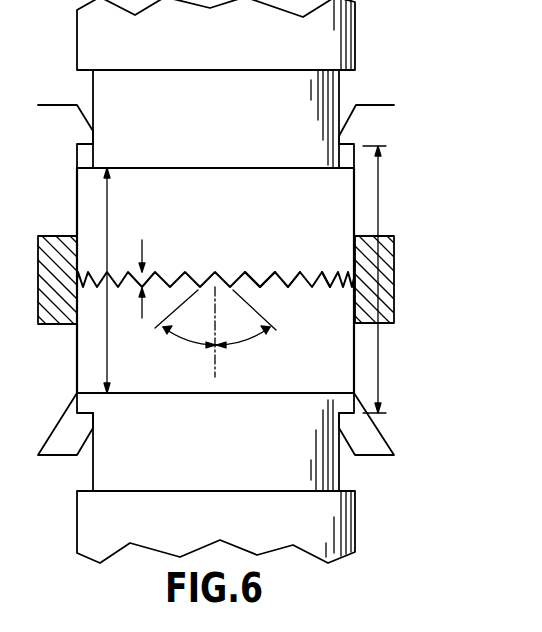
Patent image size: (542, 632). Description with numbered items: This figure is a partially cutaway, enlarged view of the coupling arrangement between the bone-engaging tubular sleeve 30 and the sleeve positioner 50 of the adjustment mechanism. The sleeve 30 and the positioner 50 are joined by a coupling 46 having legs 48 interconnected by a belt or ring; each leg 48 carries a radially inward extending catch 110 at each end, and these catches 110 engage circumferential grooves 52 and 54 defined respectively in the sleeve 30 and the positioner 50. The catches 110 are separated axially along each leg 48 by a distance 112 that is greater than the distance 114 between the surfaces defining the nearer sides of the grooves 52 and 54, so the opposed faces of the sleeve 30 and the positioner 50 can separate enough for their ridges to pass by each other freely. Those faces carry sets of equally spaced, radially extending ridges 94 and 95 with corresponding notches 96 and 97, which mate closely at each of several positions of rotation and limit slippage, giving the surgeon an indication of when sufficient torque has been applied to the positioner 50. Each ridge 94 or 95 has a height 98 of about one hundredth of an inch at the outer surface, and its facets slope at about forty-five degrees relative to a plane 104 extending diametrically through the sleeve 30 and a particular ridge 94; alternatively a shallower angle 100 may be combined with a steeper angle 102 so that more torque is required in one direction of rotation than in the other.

The tubular sleeve 30 is at (355, 518).
The sleeve positioner 50 is at (355, 35).
The circumferential groove 54 is at (339, 85).
The circumferential groove 52 is at (339, 475).
The leg 48 is at (395, 127).
The coupling 46 is at (394, 272).
The ridge 94 is at (185, 272).
The notch 96 is at (258, 270).
The notch 97 is at (300, 273).
The ridge 95 is at (330, 289).
The ridge height 98 is at (142, 240).
The shallower angle 100 is at (185, 343).
The steeper angle 102 is at (243, 343).
The plane 104 is at (215, 372).
The catch 110 is at (339, 139).
The distance 112 is at (378, 186).
The distance 114 is at (108, 192).